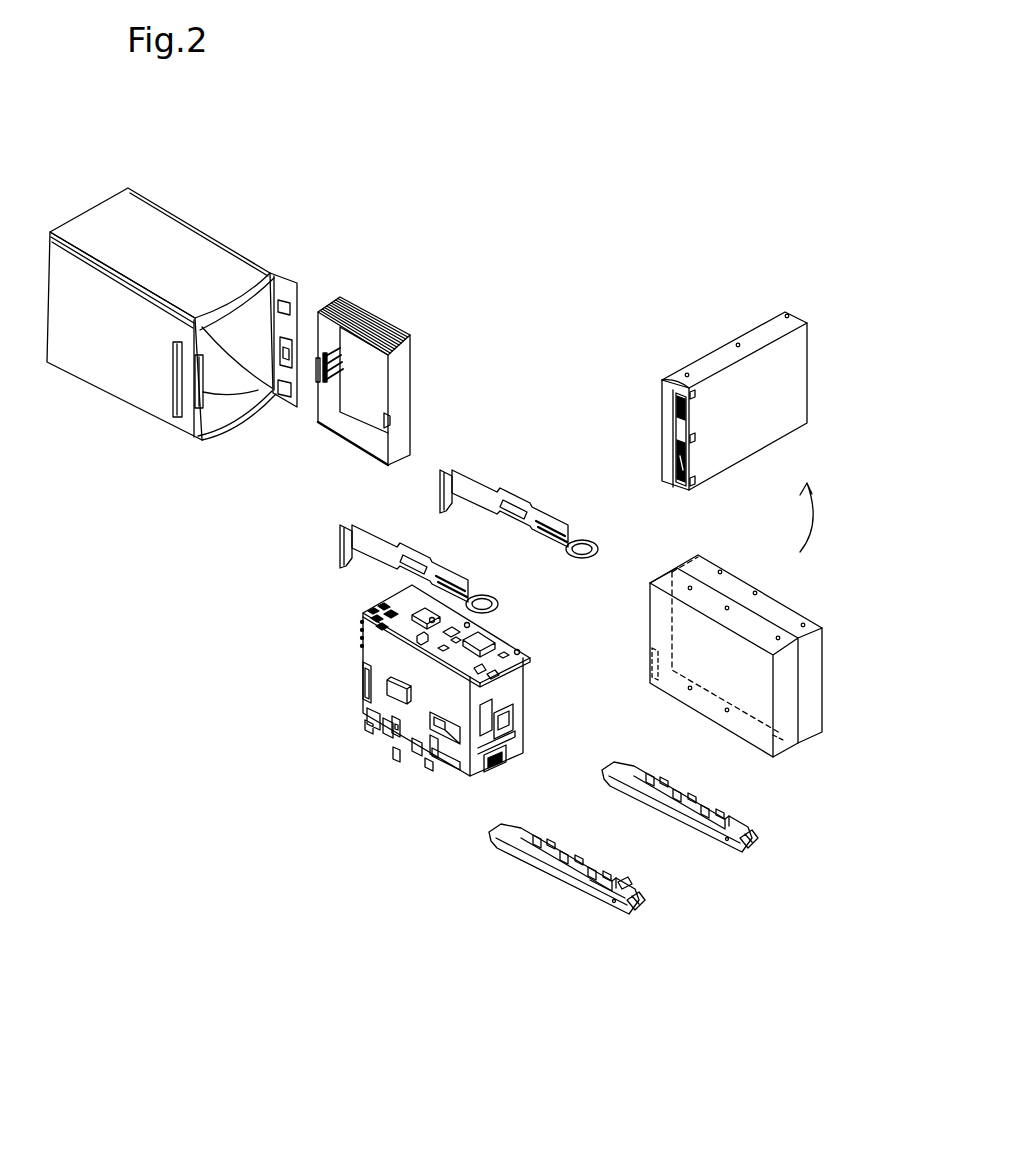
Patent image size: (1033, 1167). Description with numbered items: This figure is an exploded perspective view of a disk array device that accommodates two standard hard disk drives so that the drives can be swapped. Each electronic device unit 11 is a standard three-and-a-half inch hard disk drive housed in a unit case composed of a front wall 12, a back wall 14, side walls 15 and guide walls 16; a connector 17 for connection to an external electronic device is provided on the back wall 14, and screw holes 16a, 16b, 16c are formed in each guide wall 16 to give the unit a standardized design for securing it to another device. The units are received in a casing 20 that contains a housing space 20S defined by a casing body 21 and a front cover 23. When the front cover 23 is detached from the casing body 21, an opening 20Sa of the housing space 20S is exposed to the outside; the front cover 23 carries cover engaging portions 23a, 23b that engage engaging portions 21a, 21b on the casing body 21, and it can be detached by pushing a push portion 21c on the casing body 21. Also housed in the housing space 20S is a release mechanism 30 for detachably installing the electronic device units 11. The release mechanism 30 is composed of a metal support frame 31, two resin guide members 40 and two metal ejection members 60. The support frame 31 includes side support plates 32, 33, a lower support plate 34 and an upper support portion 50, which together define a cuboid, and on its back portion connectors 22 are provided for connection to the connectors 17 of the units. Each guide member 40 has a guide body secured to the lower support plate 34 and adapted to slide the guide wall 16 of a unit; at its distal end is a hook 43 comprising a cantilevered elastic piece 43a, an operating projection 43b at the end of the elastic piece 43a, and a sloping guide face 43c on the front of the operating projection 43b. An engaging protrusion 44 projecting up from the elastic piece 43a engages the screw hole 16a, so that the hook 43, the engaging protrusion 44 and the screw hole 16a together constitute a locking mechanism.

The casing 20 is at (360, 192).
The casing body 21 is at (197, 245).
The engaging portion 21a is at (187, 392).
The engaging portion 21b is at (277, 368).
The push portion 21c is at (182, 383).
The housing space 20S is at (210, 393).
The opening 20Sa is at (248, 400).
The front cover 23 is at (350, 293).
The cover engaging portion 23a is at (385, 418).
The cover engaging portion 23b is at (342, 340).
The ejection member 60 is at (440, 553).
The upper support portion 50 is at (495, 640).
The release mechanism 30 is at (423, 850).
The side support plate 32 is at (523, 697).
The connector 22 is at (372, 676).
The support frame 31 is at (373, 727).
The side support plate 33 is at (403, 738).
The lower support plate 34 is at (457, 775).
The electronic device unit 11 is at (752, 445).
The front wall 12 is at (792, 707).
The back wall 14 is at (663, 386).
The side wall 15 is at (682, 620).
The guide wall 16 is at (668, 582).
The screw hole 16a is at (780, 738).
The screw hole 16b is at (727, 710).
The screw hole 16c is at (690, 688).
The connector 17 is at (676, 486).
The guide member 40 is at (657, 817).
The hook 43 is at (643, 1007).
The elastic piece 43a is at (600, 898).
The operating projection 43b is at (617, 913).
The sloping guide face 43c is at (633, 907).
The engaging protrusion 44 is at (628, 887).